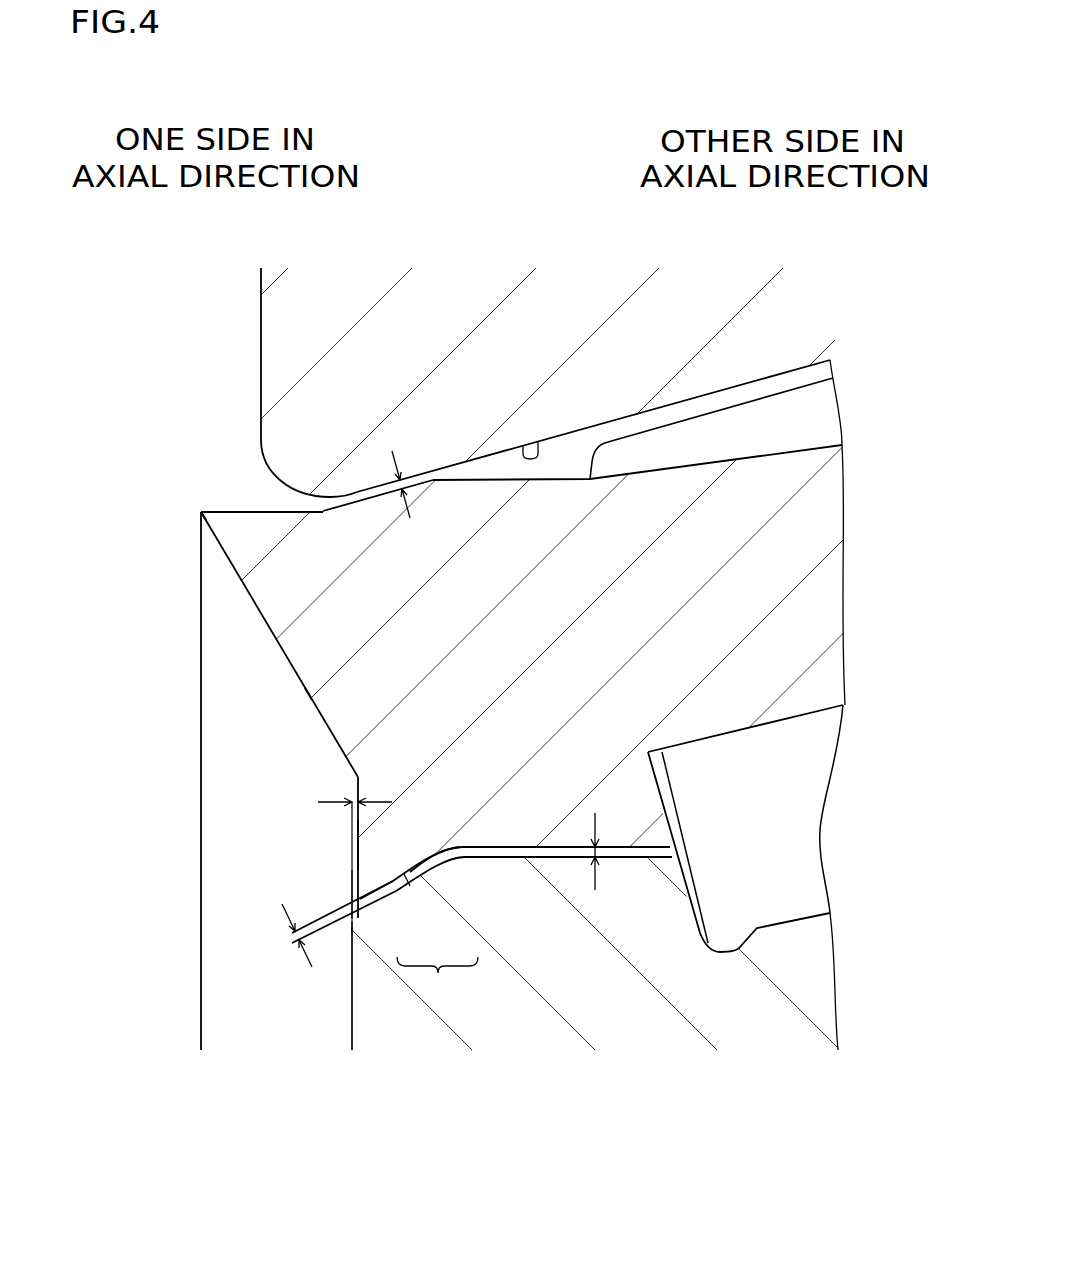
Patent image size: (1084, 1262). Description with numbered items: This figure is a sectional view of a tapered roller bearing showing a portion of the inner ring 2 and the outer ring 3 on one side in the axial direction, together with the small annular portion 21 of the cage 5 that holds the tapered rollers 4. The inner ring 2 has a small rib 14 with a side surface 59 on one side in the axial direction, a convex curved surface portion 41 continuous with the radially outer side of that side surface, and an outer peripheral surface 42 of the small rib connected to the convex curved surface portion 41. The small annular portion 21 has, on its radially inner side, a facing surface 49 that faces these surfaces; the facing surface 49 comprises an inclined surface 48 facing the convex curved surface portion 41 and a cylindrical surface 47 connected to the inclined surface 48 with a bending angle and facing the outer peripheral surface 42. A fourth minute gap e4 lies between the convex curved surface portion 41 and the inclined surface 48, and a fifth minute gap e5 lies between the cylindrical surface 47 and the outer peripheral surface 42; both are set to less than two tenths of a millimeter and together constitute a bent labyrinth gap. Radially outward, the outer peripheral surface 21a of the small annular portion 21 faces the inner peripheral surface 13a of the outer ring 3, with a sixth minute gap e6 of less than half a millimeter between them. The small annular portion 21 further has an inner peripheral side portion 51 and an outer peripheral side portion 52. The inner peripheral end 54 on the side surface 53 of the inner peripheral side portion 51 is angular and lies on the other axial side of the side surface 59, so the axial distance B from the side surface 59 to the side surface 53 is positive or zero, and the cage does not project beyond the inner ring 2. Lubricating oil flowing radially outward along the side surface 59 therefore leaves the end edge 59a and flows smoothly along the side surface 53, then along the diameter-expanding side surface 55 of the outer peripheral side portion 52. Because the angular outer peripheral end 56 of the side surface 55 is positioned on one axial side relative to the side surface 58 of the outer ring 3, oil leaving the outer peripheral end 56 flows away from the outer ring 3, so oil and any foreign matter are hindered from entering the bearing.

The inner ring 2 is at (538, 963).
The outer ring 3 is at (335, 305).
The tapered roller 4 is at (737, 910).
The cage 5 is at (542, 734).
The inner peripheral surface 13a is at (522, 446).
The small rib 14 is at (573, 876).
The small annular portion 21 is at (433, 601).
The outer peripheral surface 21a is at (358, 492).
The convex curved surface portion 41 is at (403, 876).
The outer peripheral surface 42 is at (573, 856).
The cylindrical surface 47 is at (480, 848).
The inclined surface 48 is at (396, 884).
The facing surface 49 is at (437, 983).
The inner peripheral side portion 51 is at (378, 863).
The outer peripheral side portion 52 is at (323, 642).
The side surface 53 is at (358, 845).
The inner peripheral end 54 is at (352, 897).
The side surface 55 is at (276, 722).
The outer peripheral end 56 is at (203, 510).
The side surface 58 is at (260, 337).
The side surface 59 is at (350, 1027).
The end edge 59a is at (352, 927).
The axial distance B is at (352, 800).
The fourth minute gap e4 is at (285, 937).
The fifth minute gap e5 is at (598, 852).
The sixth minute gap e6 is at (397, 466).